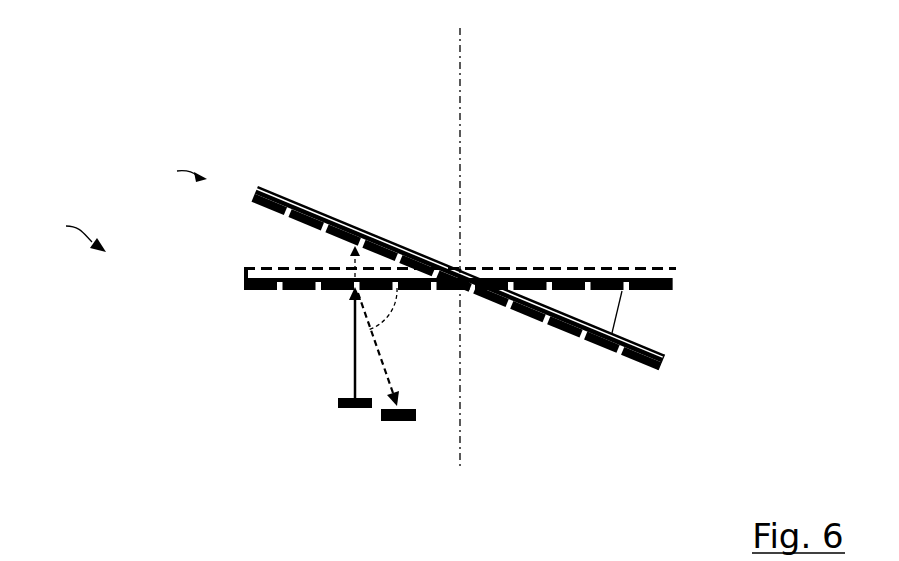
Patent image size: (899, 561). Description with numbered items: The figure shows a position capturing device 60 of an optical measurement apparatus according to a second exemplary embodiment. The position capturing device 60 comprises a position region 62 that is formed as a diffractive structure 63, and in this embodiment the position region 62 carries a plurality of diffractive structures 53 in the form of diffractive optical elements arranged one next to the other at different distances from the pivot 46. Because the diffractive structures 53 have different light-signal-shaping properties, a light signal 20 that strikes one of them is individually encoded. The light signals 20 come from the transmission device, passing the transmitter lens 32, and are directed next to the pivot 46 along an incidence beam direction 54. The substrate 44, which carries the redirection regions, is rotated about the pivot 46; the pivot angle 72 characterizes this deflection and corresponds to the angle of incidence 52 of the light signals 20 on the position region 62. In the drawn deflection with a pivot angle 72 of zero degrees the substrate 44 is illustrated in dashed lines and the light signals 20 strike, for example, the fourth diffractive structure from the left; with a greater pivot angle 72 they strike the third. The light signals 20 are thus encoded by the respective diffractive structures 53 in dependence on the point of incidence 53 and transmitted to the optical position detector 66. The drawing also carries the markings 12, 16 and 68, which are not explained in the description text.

The conveying device 12 is at (68, 230).
The axis 16 is at (432, 44).
The light signals 20 is at (350, 366).
The transmitter lens 32 is at (343, 409).
The substrate 44 is at (650, 268).
The pivot 46 is at (460, 262).
The angle of incidence 52 is at (350, 307).
The diffractive structures 53 is at (343, 247).
The incidence beam direction 54 is at (350, 381).
The position capturing device 60 is at (173, 173).
The position region 62 is at (674, 283).
The diffractive structure 63 is at (527, 282).
The optical position detector 66 is at (397, 421).
The pivot angle 68 is at (390, 378).
The pivot angle 72 is at (620, 301).